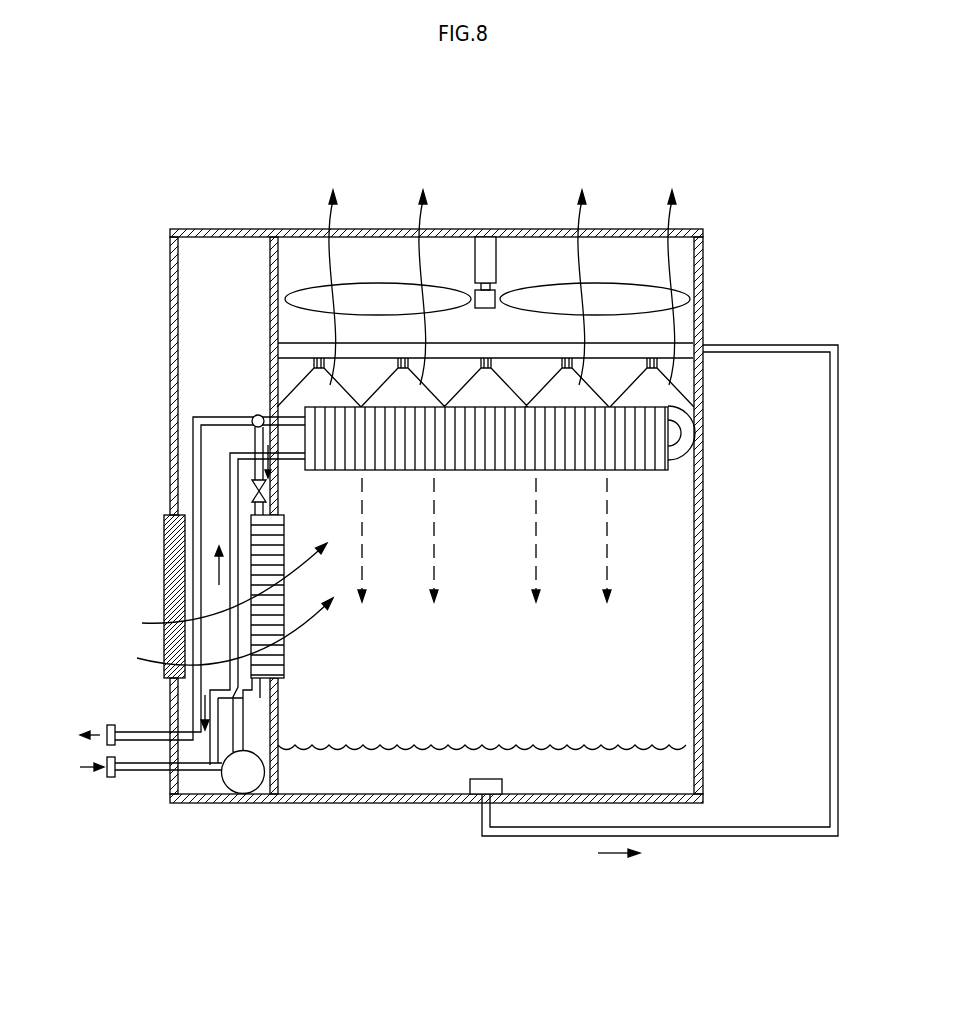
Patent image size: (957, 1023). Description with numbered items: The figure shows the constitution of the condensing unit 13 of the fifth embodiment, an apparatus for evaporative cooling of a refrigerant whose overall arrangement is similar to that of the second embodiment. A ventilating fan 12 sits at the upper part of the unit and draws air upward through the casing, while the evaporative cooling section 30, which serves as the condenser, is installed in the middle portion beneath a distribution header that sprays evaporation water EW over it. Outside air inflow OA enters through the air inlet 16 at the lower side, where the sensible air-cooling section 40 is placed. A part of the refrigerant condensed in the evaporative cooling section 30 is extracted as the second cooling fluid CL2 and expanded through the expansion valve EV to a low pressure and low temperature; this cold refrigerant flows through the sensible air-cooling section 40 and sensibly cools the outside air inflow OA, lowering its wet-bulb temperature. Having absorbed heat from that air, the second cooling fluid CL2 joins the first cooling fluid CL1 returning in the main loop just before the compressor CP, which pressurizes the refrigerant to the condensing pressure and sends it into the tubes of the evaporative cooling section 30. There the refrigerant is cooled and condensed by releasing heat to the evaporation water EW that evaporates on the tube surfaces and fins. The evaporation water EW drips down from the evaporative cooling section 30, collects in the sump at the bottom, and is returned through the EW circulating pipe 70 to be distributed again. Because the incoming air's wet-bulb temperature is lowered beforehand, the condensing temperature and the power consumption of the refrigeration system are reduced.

The condensing unit 13 is at (437, 100).
The ventilating fan 12 is at (528, 283).
The evaporative cooling section 30 is at (323, 412).
The air inlet 16 is at (253, 532).
The sensible air-cooling section 40 is at (259, 606).
The EW circulating pipe 70 is at (838, 795).
The first cooling fluid CL1 is at (242, 410).
The second cooling fluid CL2 is at (255, 458).
The expansion valve EV is at (253, 489).
The outside air inflow OA is at (208, 648).
The compressor CP is at (243, 773).
The evaporation water EW is at (393, 777).